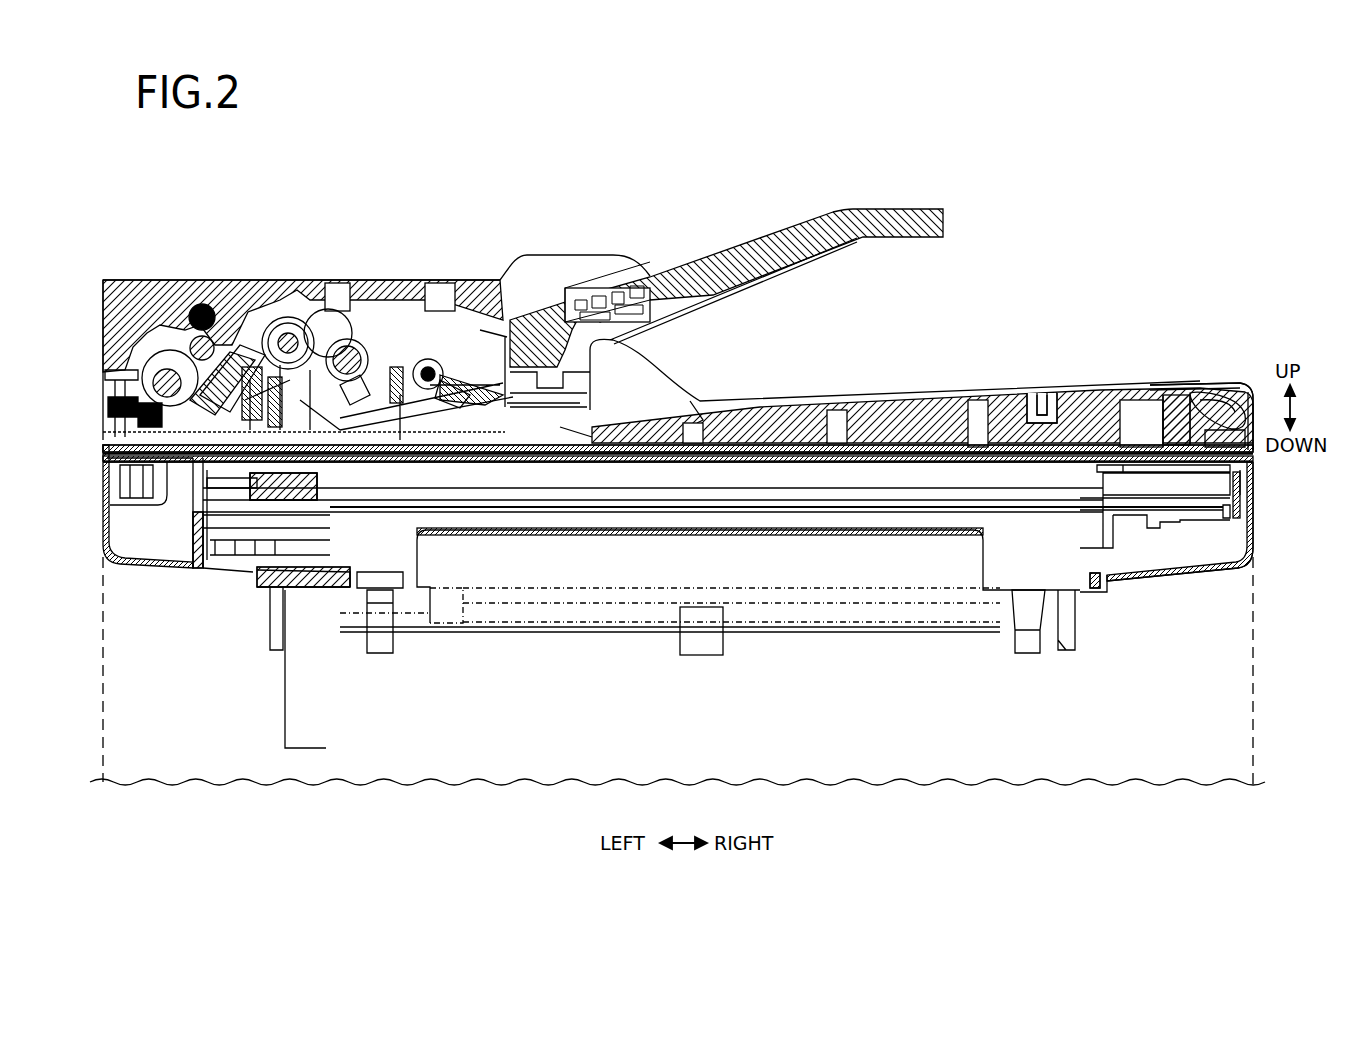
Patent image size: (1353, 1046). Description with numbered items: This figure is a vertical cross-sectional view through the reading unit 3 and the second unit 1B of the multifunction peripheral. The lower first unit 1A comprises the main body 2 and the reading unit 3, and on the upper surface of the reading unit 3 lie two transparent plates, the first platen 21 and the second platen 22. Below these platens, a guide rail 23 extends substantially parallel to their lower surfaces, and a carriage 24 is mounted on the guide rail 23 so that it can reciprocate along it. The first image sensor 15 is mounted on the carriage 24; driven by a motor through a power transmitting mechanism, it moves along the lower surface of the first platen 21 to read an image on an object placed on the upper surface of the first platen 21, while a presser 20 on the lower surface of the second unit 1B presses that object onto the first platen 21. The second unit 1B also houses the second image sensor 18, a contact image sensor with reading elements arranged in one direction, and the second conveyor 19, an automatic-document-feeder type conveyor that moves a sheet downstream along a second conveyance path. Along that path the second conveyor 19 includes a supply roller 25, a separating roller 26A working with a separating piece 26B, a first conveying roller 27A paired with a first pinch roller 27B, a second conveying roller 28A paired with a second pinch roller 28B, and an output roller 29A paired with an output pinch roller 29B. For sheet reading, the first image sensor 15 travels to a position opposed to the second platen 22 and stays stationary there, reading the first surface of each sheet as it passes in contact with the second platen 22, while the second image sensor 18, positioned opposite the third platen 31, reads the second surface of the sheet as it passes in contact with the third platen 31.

The first unit 1A is at (1260, 540).
The second unit 1B is at (1238, 388).
The main body 2 is at (1258, 712).
The reading unit 3 is at (1258, 490).
The first image sensor 15 is at (263, 473).
The second image sensor 18 is at (228, 407).
The second conveyor 19 is at (297, 310).
The presser 20 is at (615, 452).
The first platen 21 is at (557, 462).
The second platen 22 is at (213, 483).
The guide rail 23 is at (767, 497).
The carriage 24 is at (320, 500).
The supply roller 25 is at (353, 393).
The separating roller 26A is at (307, 347).
The separating piece 26B is at (272, 360).
The first conveying roller 27A is at (192, 343).
The first pinch roller 27B is at (200, 313).
The second conveying roller 28A is at (162, 373).
The second pinch roller 28B is at (140, 403).
The output roller 29A is at (433, 373).
The output pinch roller 29B is at (450, 393).
The third platen 31 is at (205, 462).